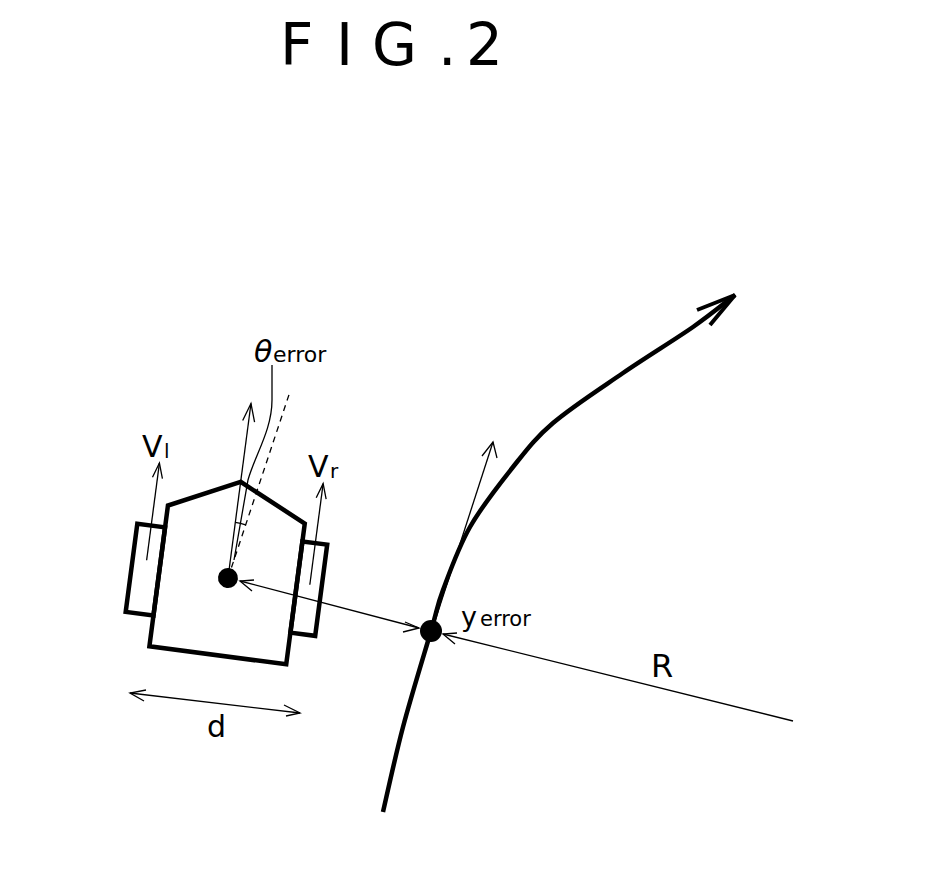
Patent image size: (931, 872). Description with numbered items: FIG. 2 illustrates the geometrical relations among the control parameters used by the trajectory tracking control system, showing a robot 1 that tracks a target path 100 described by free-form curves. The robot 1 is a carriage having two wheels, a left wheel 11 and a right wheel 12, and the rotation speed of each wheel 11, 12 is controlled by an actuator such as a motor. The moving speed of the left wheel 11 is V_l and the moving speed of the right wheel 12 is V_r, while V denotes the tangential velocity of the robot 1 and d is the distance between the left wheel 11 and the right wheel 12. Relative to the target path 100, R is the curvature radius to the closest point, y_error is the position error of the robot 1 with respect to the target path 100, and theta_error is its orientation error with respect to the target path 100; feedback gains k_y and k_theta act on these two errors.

The robot 1 is at (155, 650).
The left wheel 11 is at (132, 568).
The right wheel 12 is at (318, 635).
The target path 100 is at (623, 372).